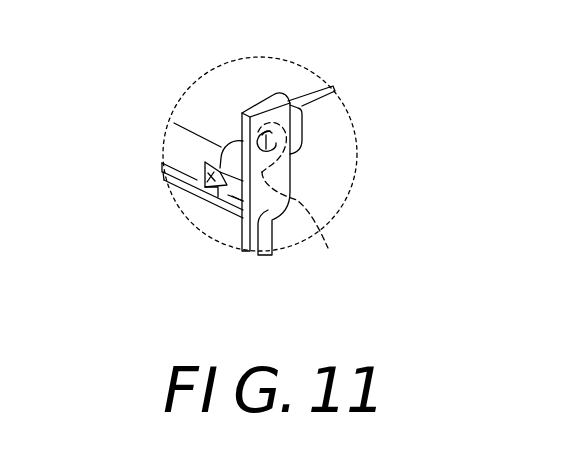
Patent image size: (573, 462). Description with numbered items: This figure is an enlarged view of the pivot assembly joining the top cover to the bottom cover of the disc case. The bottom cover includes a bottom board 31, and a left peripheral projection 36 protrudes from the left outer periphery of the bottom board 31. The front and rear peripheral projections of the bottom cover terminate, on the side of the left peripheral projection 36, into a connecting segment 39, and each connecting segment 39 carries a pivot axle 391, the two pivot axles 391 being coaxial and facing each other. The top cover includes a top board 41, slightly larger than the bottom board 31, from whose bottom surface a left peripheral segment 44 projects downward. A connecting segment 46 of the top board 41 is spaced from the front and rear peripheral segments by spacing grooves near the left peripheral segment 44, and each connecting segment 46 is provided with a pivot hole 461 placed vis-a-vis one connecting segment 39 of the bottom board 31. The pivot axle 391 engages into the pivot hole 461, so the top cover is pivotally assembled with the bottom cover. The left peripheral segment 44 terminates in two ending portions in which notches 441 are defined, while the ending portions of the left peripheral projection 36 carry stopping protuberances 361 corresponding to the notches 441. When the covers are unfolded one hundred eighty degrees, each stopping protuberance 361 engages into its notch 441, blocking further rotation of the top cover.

The top board 41 is at (303, 77).
The connecting segment 39 is at (290, 172).
The pivot axle 391 is at (307, 226).
The connecting segment 46 is at (295, 132).
The pivot hole 461 is at (340, 98).
The left peripheral segment 44 is at (163, 152).
The notch 441 is at (190, 208).
The left peripheral projection 36 is at (202, 218).
The bottom board 31 is at (192, 228).
The stopping protuberance 361 is at (241, 200).